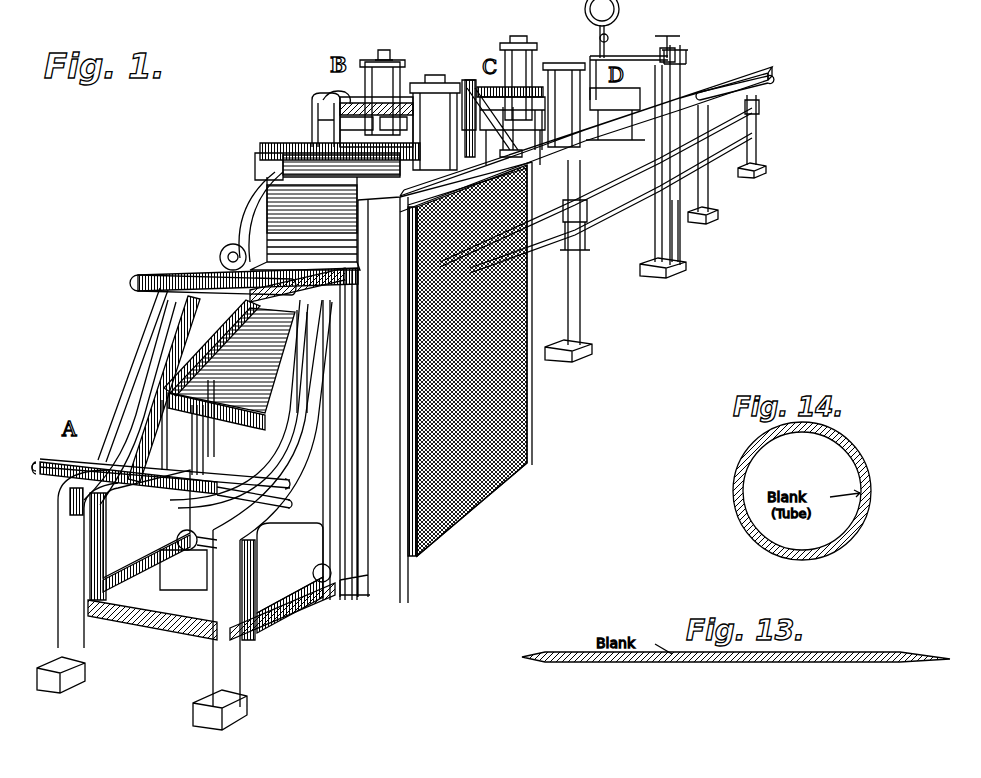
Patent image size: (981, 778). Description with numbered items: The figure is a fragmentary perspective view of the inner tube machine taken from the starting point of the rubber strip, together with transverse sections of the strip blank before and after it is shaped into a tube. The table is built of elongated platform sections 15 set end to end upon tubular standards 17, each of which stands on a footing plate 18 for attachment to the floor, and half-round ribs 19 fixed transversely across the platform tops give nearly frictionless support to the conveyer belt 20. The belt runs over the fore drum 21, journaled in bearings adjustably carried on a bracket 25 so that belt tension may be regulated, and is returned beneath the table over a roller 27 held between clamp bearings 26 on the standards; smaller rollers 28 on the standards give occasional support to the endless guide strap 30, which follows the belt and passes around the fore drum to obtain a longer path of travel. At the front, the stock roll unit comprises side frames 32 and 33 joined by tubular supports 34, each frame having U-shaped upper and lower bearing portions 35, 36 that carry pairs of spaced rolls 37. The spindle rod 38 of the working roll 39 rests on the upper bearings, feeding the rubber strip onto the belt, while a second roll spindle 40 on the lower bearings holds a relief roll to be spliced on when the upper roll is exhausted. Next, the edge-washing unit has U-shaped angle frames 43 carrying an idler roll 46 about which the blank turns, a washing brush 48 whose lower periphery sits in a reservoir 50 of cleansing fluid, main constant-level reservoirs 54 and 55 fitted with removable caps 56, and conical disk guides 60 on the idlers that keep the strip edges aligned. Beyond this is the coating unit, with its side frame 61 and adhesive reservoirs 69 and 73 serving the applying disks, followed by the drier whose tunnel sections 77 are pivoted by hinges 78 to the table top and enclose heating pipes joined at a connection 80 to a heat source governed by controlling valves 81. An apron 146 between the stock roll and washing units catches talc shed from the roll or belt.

The platform sections 15 is at (772, 80).
The tubular standards 17 is at (580, 257).
The footing plate 18 is at (648, 262).
The half-round ribs 19 is at (566, 342).
The conveyer belt 20 is at (620, 62).
The fore drum 21 is at (268, 196).
The bracket 25 is at (228, 247).
The clamp bearings 26 is at (588, 214).
The roller 27 is at (588, 219).
The smaller rollers 28 is at (572, 243).
The endless guide strap 30 is at (612, 214).
The side frame 32 is at (130, 372).
The side frame 33 is at (340, 390).
The tubular supports 34 is at (160, 622).
The upper bearing portions 35 is at (358, 322).
The lower bearing portions 36 is at (58, 530).
The rolls 37 is at (358, 276).
The spindle rod 38 is at (155, 264).
The roll 39 is at (215, 272).
The roll spindle 40 is at (92, 468).
The angle frames 43 is at (318, 112).
The idler roll 46 is at (312, 96).
The washing brush 48 is at (320, 141).
The reservoir 50 is at (283, 160).
The main fluid reservoir 54 is at (421, 88).
The main fluid reservoir 55 is at (364, 68).
The removable caps 56 is at (385, 48).
The conical disk guides 60 is at (330, 90).
The side frame 61 is at (470, 80).
The reservoir 69 is at (582, 75).
The reservoir 73 is at (533, 66).
The tunnel sections 77 is at (682, 82).
The hinges 78 is at (725, 85).
The connection 80 is at (680, 201).
The controlling valves 81 is at (670, 44).
The apron 146 is at (253, 422).